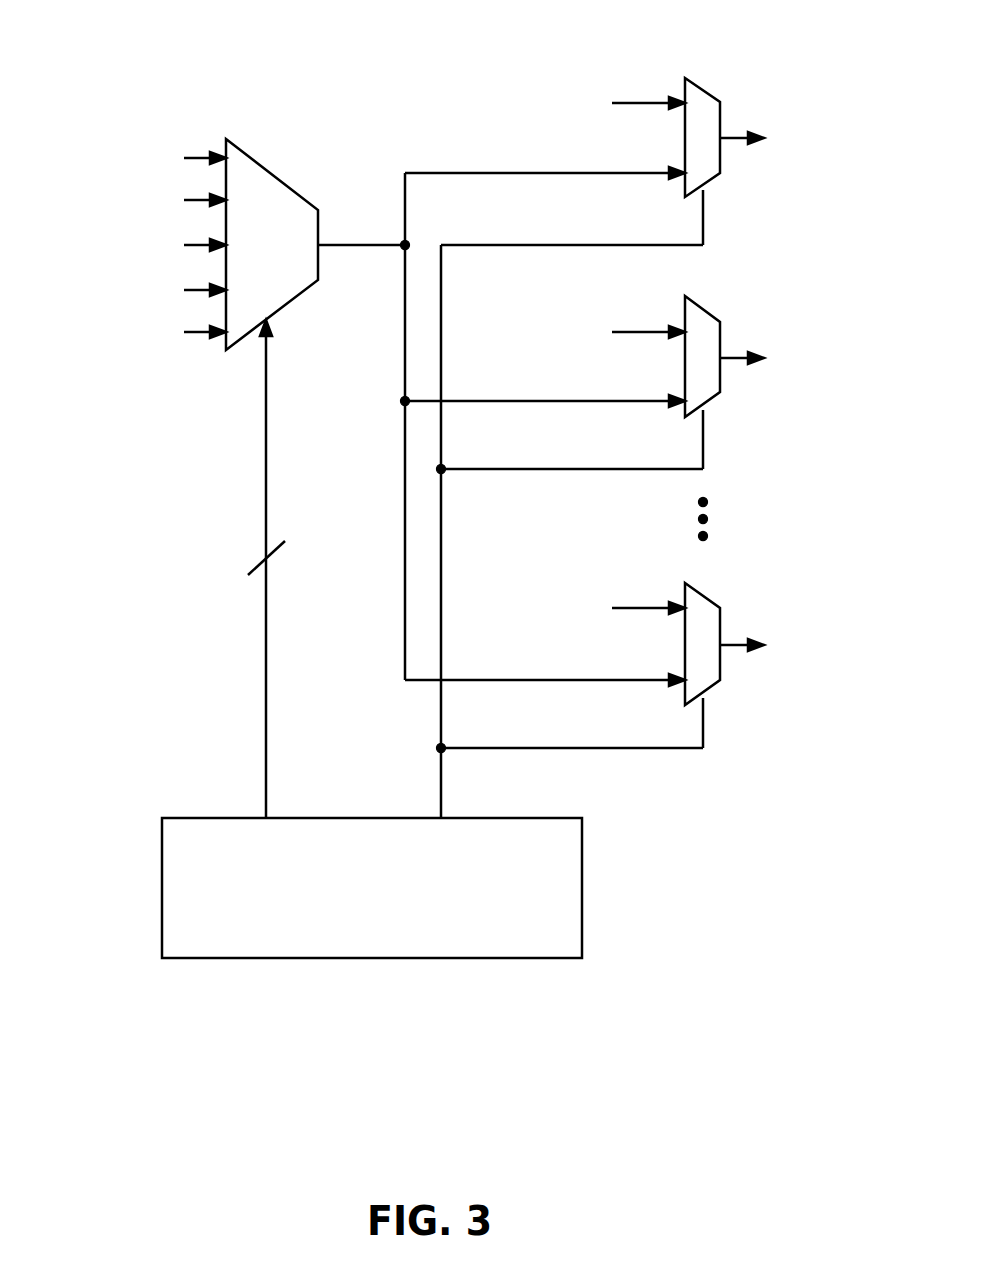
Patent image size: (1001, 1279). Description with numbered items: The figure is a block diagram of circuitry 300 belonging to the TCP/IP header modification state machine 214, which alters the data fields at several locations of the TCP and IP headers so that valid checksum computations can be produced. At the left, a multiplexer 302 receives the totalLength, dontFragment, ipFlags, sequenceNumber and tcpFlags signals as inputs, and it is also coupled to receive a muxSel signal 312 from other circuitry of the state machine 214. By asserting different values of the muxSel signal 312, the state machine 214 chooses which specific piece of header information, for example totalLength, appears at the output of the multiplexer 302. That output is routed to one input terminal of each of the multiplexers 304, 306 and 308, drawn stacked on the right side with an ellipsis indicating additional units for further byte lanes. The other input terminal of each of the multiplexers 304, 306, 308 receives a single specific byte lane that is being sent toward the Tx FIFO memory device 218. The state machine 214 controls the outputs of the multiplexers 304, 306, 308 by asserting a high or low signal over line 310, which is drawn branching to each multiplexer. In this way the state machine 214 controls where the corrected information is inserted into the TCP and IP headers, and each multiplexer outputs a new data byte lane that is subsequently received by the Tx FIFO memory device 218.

The circuitry 300 is at (450, 41).
The multiplexer 302 is at (293, 257).
The multiplexer 304 is at (720, 102).
The multiplexer 306 is at (720, 322).
The multiplexer 308 is at (720, 608).
The line 310 is at (441, 788).
The muxSel signal 312 is at (265, 745).
The TCP/IP header modification state machine 214 is at (353, 914).
The Tx FIFO memory device 218 is at (840, 393).